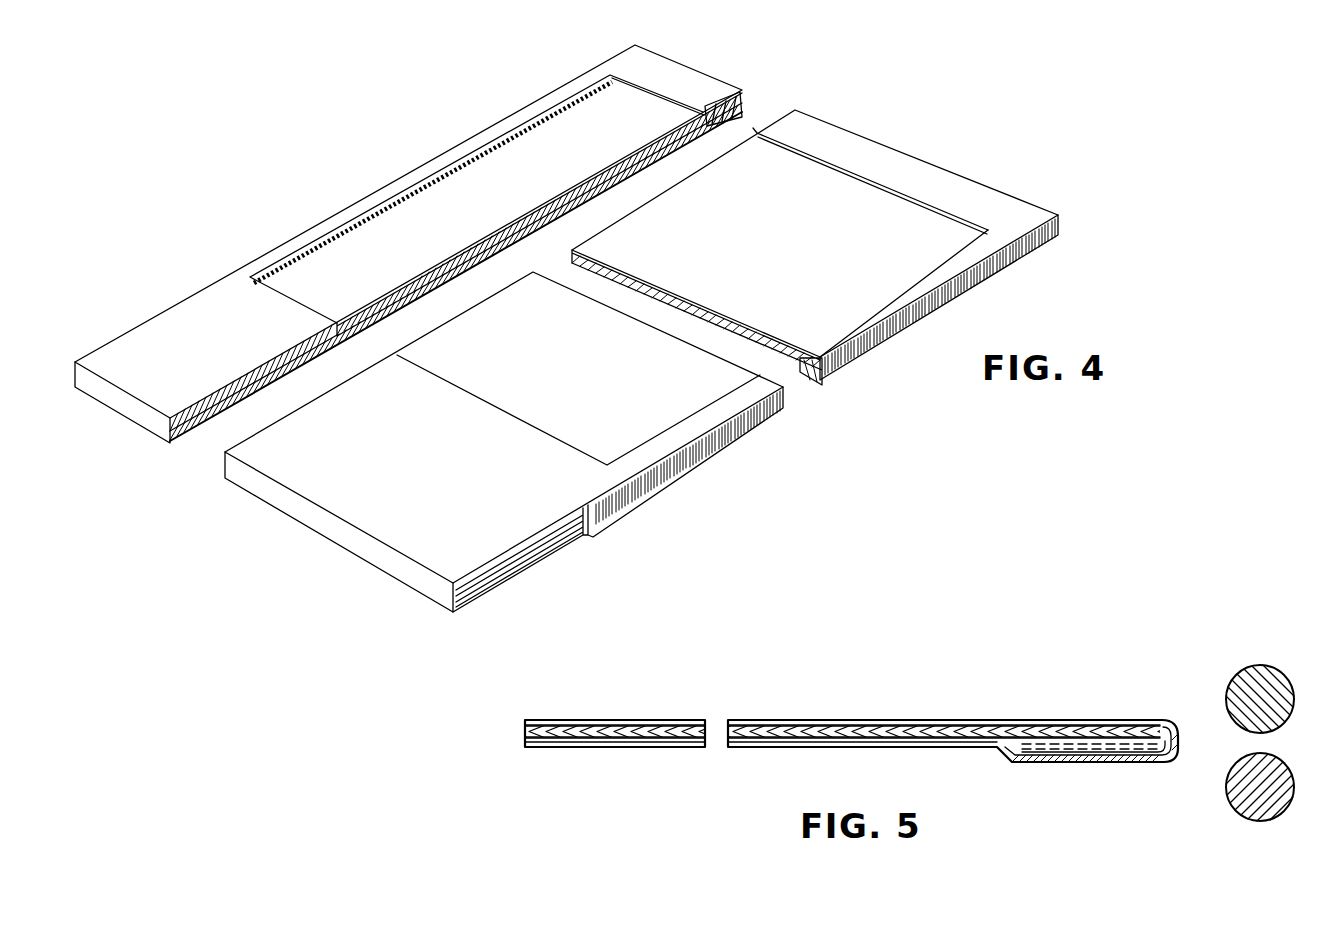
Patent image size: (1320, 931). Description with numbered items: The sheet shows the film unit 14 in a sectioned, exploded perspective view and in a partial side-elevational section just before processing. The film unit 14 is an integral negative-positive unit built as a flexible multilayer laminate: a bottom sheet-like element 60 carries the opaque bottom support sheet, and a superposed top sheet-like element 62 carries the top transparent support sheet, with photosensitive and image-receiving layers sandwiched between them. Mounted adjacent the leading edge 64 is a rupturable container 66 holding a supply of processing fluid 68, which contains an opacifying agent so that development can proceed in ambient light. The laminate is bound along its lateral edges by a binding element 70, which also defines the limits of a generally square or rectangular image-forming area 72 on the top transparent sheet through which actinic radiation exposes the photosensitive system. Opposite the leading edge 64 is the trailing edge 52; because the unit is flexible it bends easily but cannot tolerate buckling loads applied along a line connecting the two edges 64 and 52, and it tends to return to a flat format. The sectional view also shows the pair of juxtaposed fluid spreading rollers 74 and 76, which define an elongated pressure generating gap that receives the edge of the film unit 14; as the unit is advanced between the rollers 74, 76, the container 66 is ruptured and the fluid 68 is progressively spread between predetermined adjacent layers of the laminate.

In FIG. 4, the film unit 14 is at (971, 172).
In FIG. 4, the trailing edge 52 is at (747, 99).
In FIG. 4, the bottom sheet-like element 60 is at (440, 287).
In FIG. 5, the bottom sheet-like element 60 is at (645, 741).
In FIG. 4, the top sheet-like element 62 is at (504, 252).
In FIG. 5, the top sheet-like element 62 is at (617, 730).
In FIG. 4, the leading edge 64 is at (374, 555).
In FIG. 5, the leading edge 64 is at (1180, 738).
In FIG. 4, the rupturable container 66 is at (218, 423).
In FIG. 5, the rupturable container 66 is at (1072, 754).
In FIG. 4, the processing fluid 68 is at (251, 389).
In FIG. 5, the processing fluid 68 is at (1127, 746).
In FIG. 4, the binding element 70 is at (676, 78).
In FIG. 5, the binding element 70 is at (548, 720).
In FIG. 4, the image-forming area 72 is at (778, 249).
In FIG. 5, the fluid spreading roller 74 is at (1238, 727).
In FIG. 5, the fluid spreading roller 76 is at (1280, 813).